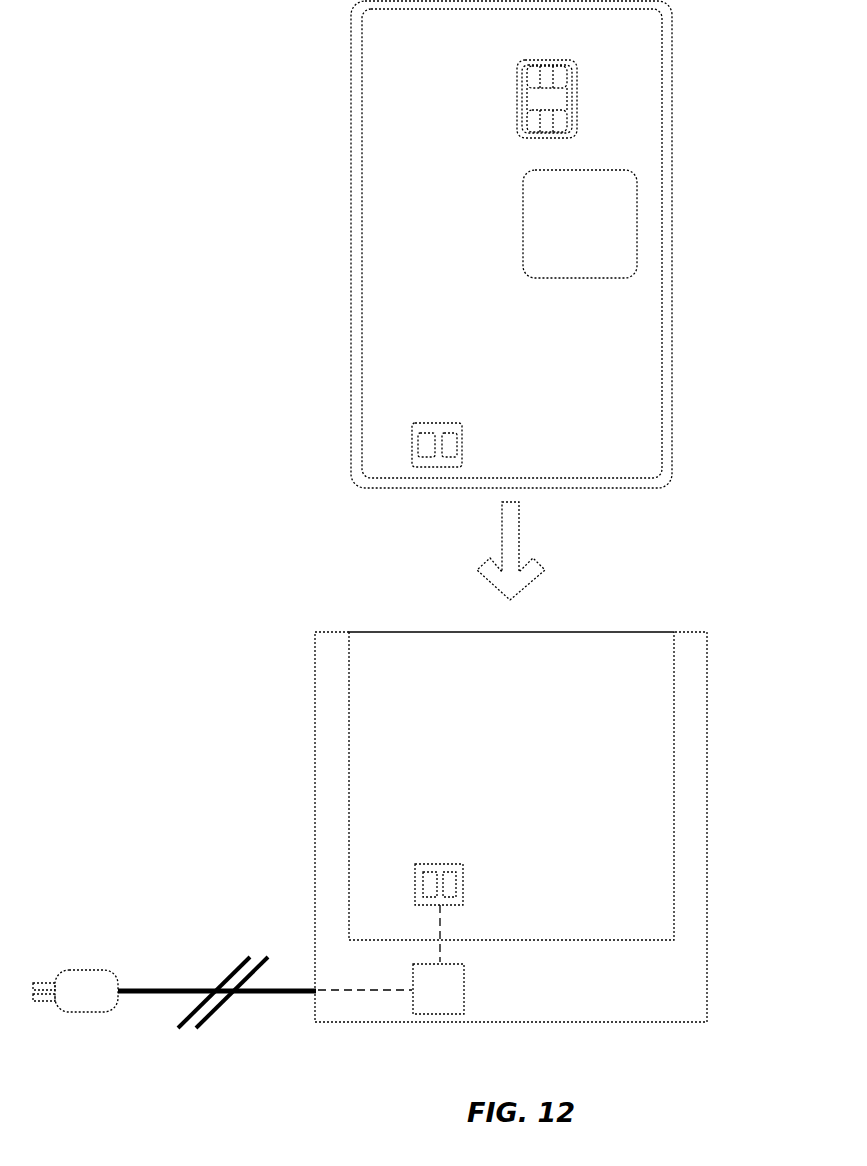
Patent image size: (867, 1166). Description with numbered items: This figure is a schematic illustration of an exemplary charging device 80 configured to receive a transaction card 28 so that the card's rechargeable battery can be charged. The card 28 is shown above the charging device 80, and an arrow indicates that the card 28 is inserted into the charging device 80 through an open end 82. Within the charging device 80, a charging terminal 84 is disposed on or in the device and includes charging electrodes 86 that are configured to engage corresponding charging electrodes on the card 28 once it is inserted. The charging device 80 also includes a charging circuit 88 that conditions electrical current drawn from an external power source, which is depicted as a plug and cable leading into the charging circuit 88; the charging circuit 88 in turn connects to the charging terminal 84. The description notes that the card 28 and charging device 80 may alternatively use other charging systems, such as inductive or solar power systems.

The card 28 is at (312, 253).
The charging device 80 is at (314, 739).
The open end 82 is at (424, 827).
The charging terminal 84 is at (491, 854).
The charging electrodes 86 is at (426, 870).
The charging circuit 88 is at (438, 989).